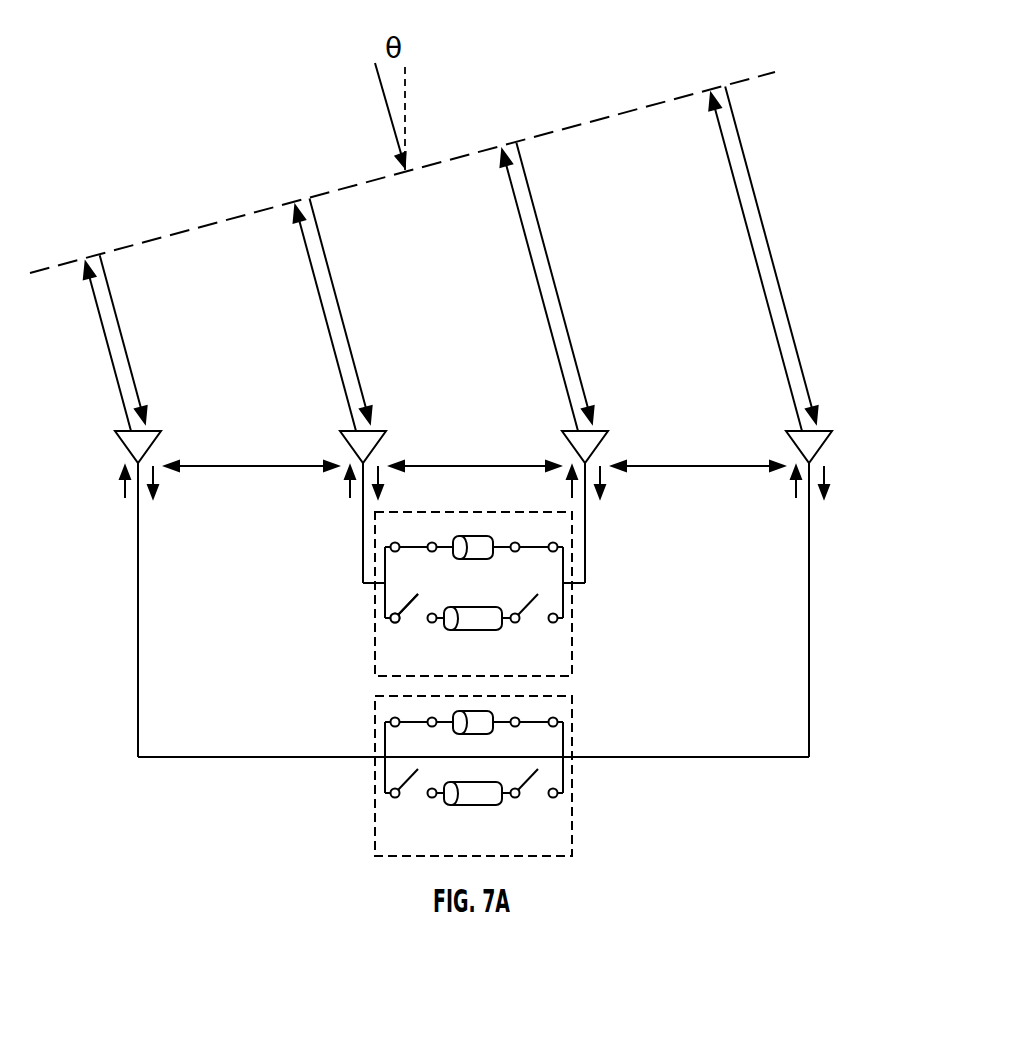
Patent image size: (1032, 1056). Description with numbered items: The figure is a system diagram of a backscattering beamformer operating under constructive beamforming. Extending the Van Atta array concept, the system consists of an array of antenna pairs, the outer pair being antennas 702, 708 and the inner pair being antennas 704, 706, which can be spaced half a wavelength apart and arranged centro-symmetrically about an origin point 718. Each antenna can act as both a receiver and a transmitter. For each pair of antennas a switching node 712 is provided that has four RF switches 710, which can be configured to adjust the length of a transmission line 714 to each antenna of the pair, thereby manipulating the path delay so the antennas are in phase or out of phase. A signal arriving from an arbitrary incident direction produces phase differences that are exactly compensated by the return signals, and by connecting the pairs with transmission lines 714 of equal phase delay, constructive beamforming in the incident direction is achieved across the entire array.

The antenna 702 is at (831, 431).
The antenna 704 is at (607, 431).
The antenna 706 is at (385, 431).
The antenna 708 is at (160, 431).
The RF switch 710 is at (392, 627).
The switching node 712 is at (375, 663).
The transmission line 714 is at (585, 540).
The origin point 718 is at (475, 438).